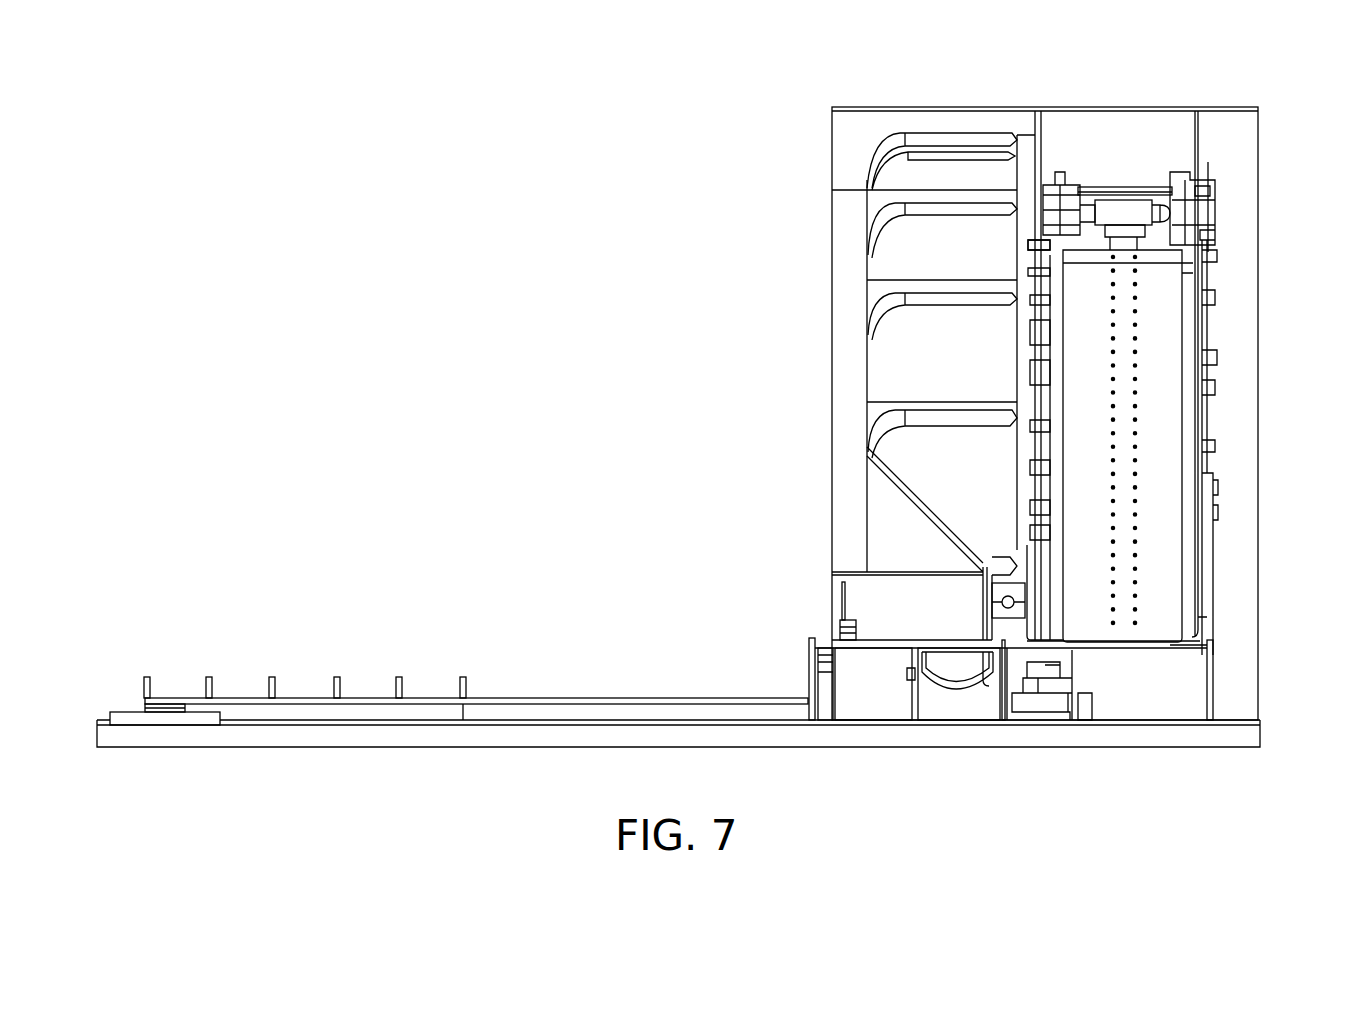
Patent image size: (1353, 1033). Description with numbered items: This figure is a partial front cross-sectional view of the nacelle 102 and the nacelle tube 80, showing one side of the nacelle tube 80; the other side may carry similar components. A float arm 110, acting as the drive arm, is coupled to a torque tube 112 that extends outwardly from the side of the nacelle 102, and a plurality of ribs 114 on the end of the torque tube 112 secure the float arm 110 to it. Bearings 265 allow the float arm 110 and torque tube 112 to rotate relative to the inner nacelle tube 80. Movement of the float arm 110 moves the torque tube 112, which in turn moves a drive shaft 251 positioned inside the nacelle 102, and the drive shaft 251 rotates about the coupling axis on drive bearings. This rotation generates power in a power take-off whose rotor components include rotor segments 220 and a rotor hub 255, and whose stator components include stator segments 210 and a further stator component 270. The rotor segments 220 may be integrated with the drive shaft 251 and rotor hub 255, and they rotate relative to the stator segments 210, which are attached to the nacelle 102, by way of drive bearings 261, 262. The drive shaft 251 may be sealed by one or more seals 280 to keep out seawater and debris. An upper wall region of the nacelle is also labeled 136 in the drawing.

The nacelle tube 80 is at (577, 711).
The nacelle 102 is at (1033, 82).
The float arm 110 is at (303, 699).
The torque tube 112 is at (478, 695).
The ribs 114 is at (341, 680).
The top wall 136 is at (1220, 106).
The stator segments 210 is at (1124, 198).
The rotor segments 220 is at (1105, 231).
The drive shaft 251 is at (812, 652).
The rotor hub 255 is at (1053, 246).
The drive bearing 261 is at (1063, 672).
The drive bearing 262 is at (1025, 600).
The bearings 265 is at (172, 694).
The stator components 270 is at (1218, 205).
The seals 280 is at (912, 675).